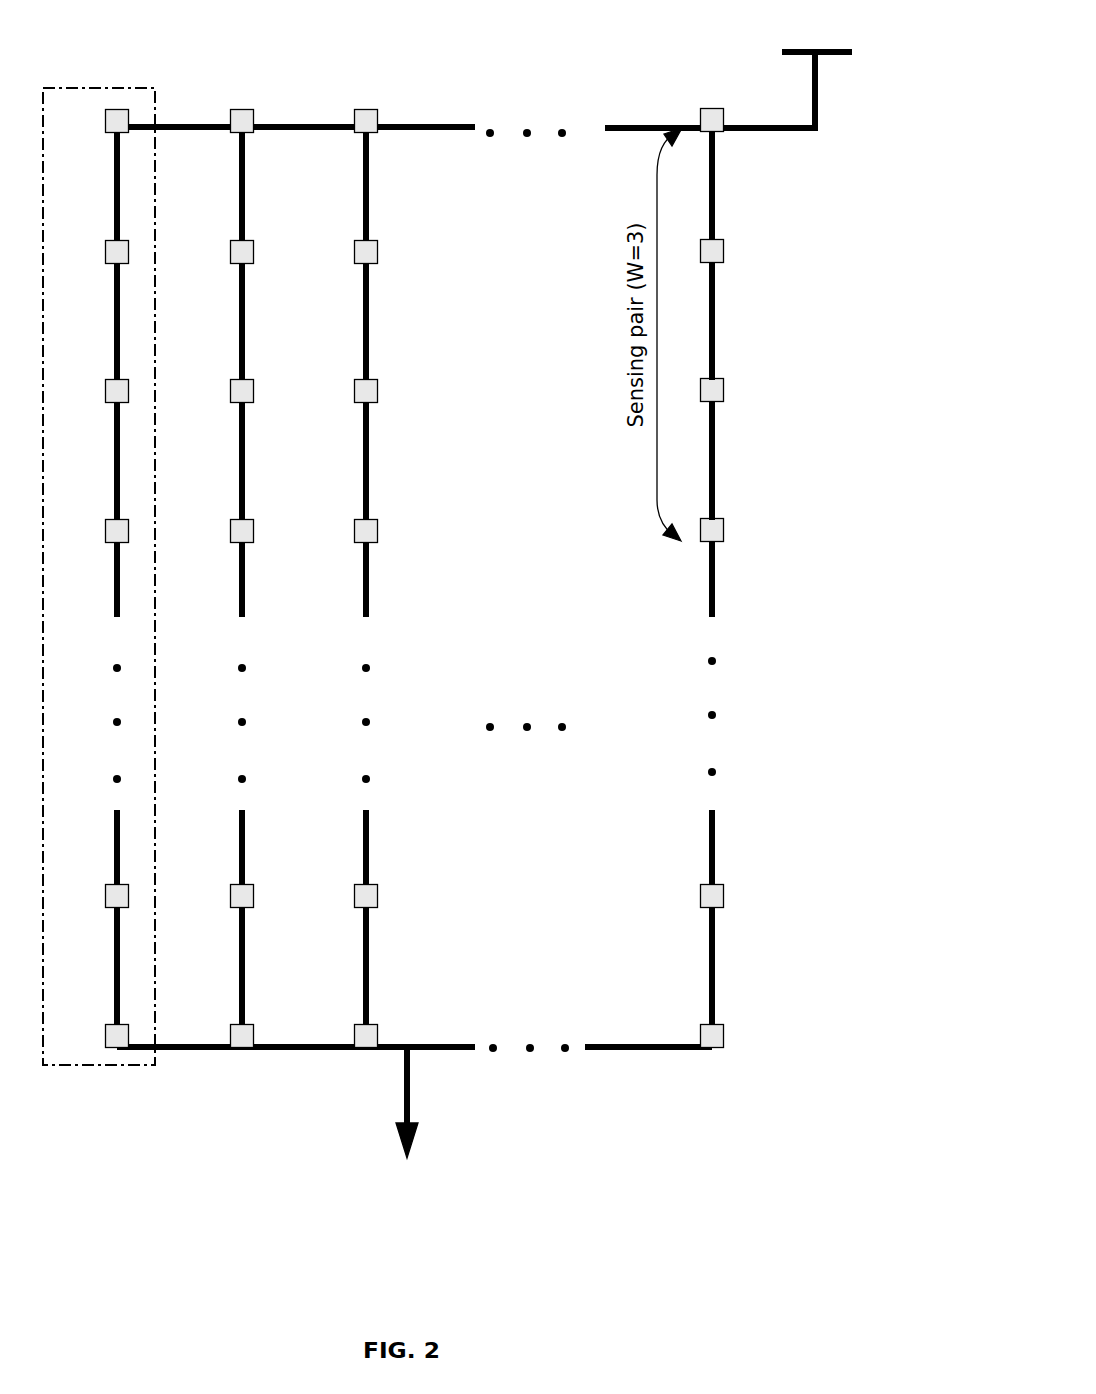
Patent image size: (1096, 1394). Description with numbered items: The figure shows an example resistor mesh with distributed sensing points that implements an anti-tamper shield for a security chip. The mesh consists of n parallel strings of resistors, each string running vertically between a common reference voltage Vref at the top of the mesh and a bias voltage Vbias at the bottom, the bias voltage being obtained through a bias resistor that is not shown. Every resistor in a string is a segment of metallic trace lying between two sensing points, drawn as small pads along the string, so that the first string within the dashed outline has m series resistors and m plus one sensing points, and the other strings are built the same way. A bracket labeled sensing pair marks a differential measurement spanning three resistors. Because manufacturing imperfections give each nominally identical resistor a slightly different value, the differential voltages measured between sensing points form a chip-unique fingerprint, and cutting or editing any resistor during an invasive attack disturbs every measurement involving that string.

The common reference voltage Vref is at (511, 77).
The bias voltage Vbias is at (414, 1108).